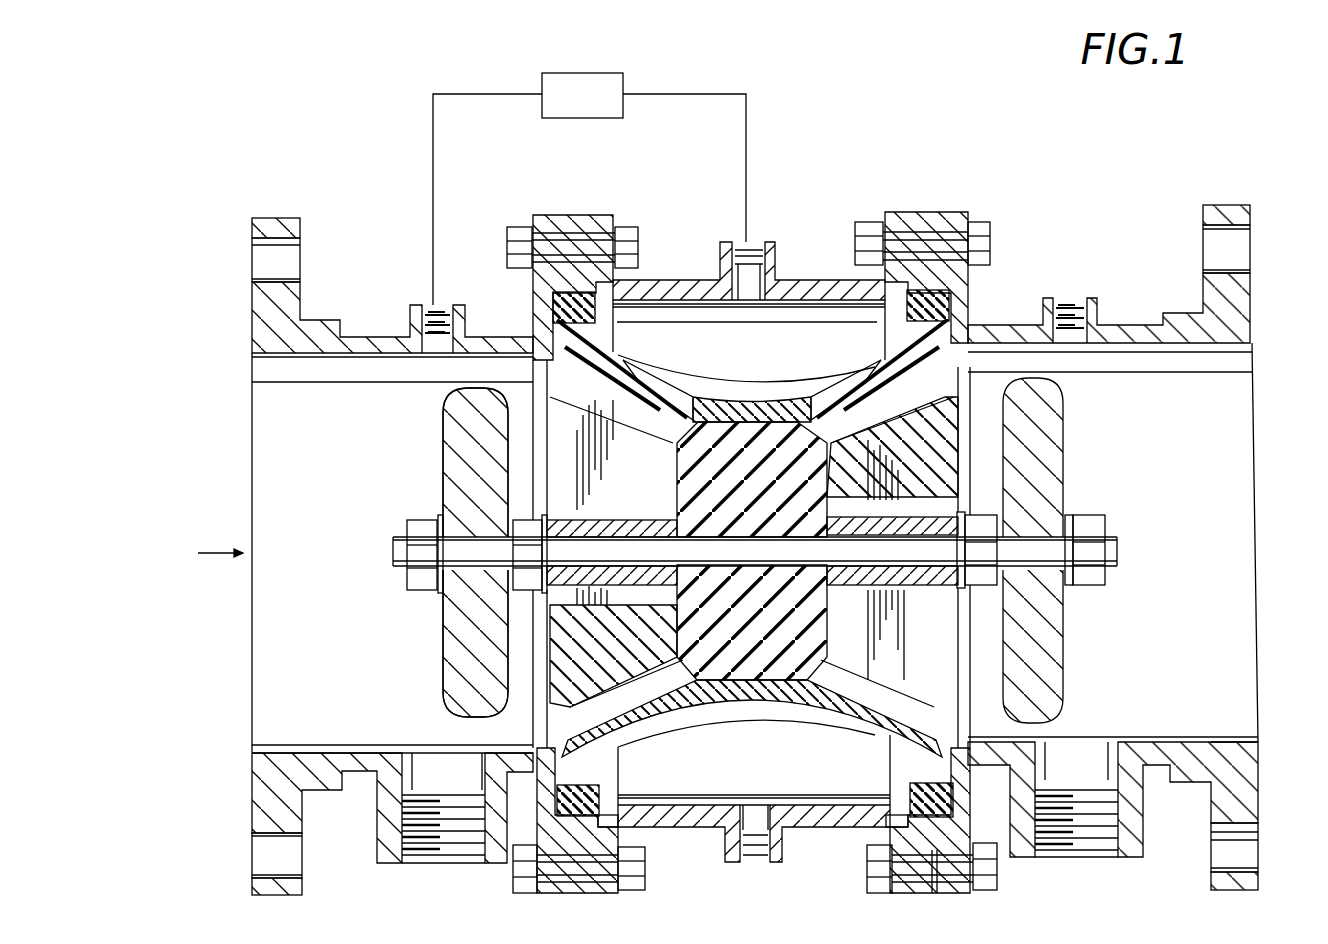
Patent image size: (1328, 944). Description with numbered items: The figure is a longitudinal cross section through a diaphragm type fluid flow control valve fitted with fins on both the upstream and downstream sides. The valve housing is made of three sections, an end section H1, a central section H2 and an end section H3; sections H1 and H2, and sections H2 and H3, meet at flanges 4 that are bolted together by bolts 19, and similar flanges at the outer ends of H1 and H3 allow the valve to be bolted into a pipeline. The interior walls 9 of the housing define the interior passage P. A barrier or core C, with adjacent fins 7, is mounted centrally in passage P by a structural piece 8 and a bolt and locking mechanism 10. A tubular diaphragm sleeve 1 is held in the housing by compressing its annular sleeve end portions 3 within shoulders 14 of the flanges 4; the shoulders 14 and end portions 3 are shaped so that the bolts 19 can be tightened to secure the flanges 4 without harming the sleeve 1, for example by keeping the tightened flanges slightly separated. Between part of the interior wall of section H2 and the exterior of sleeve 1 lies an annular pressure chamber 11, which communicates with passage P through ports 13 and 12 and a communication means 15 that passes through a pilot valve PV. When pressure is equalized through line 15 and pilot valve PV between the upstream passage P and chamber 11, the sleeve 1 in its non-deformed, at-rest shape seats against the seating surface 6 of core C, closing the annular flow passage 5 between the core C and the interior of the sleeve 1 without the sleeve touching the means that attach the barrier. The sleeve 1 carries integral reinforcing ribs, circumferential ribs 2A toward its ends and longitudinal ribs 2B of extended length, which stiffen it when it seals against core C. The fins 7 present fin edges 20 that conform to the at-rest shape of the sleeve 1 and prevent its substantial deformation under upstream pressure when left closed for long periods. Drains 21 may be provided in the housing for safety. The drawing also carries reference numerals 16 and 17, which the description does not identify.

The tubular diaphragm sleeve 1 is at (667, 407).
The circumferential reinforcing ribs 2A is at (640, 368).
The longitudinal reinforcing ribs 2B is at (745, 385).
The annular sleeve end portions 3 is at (953, 796).
The flanges 4 is at (917, 897).
The annular flow passage 5 is at (575, 672).
The seating surface 6 is at (748, 676).
The fin elements 7 is at (940, 423).
The structural piece 8 is at (452, 632).
The interior walls 9 is at (308, 752).
The bolt and locking mechanism 10 is at (513, 519).
The annular pressure chamber 11 is at (740, 780).
The port 12 is at (420, 303).
The port 13 is at (770, 242).
The shoulders 14 is at (593, 822).
The communication means 15 is at (433, 135).
The flange 16 is at (1259, 775).
The groove 17 is at (1259, 841).
The bolts 19 is at (622, 224).
The fin edges 20 is at (463, 447).
The drains 21 is at (425, 866).
The end housing section H1 is at (365, 337).
The central housing section H2 is at (690, 282).
The end housing section H3 is at (1000, 325).
The barrier or core C is at (817, 403).
The interior passage P is at (206, 553).
The pilot valve PV is at (582, 95).